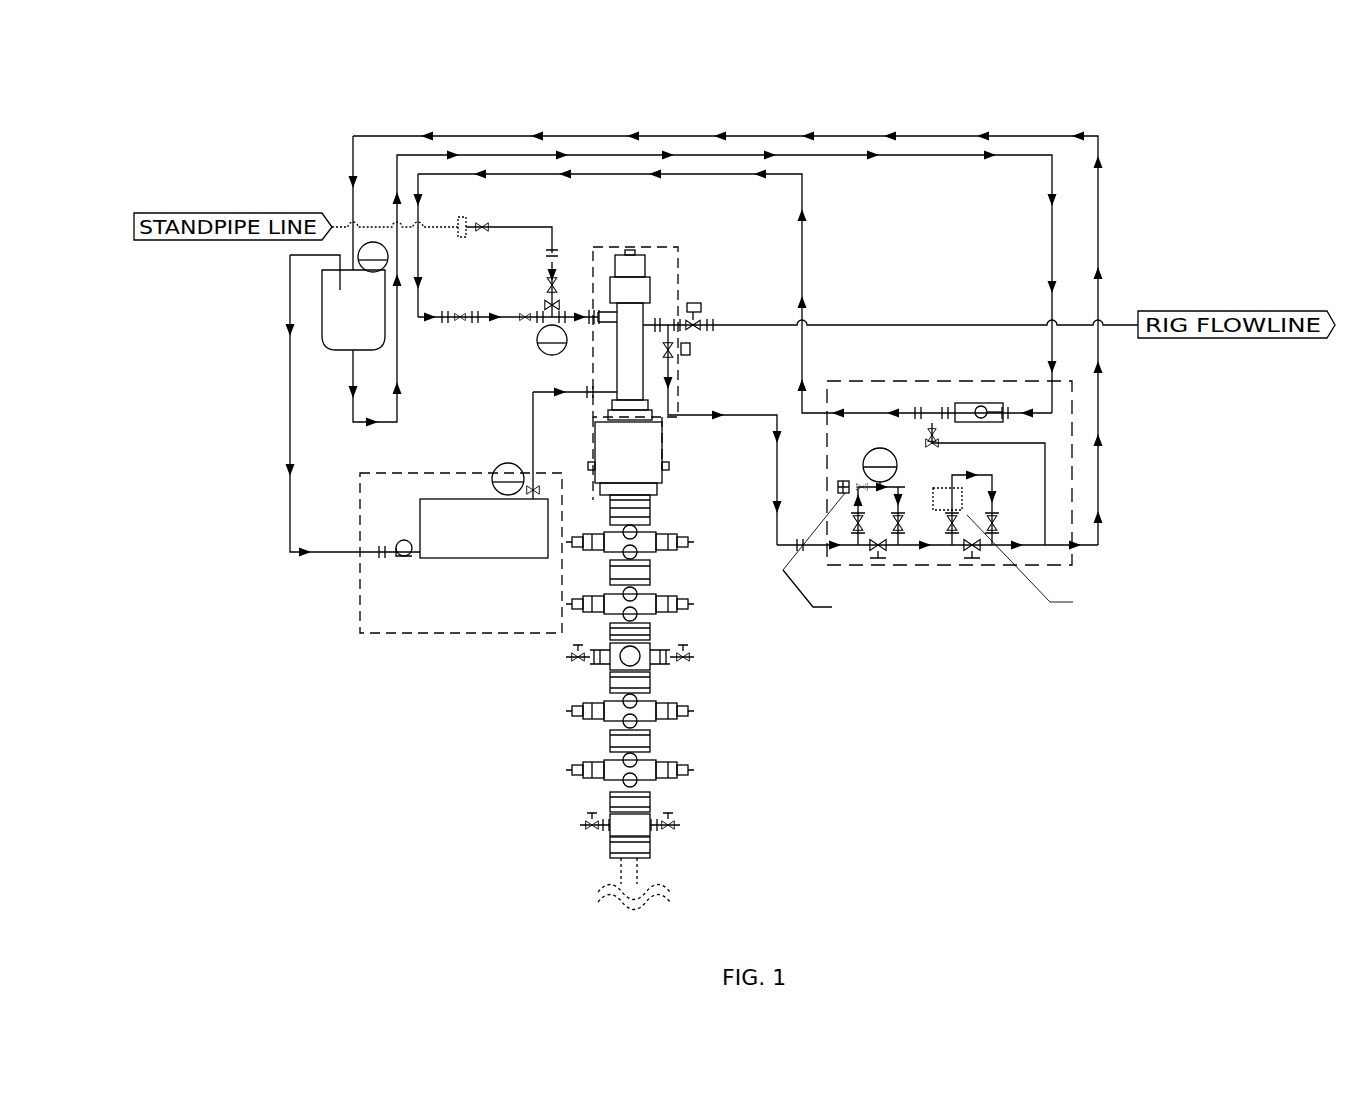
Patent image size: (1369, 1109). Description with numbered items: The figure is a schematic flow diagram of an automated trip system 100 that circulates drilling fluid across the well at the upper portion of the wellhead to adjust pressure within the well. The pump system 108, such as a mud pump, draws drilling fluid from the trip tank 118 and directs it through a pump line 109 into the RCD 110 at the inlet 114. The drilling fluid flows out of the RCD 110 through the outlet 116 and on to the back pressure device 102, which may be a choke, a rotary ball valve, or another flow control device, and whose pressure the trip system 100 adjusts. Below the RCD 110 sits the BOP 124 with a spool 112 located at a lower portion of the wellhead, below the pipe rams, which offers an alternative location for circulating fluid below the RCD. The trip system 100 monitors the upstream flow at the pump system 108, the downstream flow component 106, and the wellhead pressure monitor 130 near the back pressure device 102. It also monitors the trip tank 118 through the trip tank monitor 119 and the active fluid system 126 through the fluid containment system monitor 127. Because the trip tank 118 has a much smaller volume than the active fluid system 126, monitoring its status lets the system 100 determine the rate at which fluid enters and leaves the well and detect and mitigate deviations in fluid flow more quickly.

The automated trip system 100 is at (987, 658).
The back pressure device 102 is at (880, 640).
The downstream flow component 106 is at (1112, 648).
The pump system 108 is at (972, 377).
The pump line 109 is at (948, 370).
The RCD 110 is at (612, 283).
The spool 112 is at (612, 842).
The inlet 114 is at (587, 327).
The outlet 116 is at (652, 318).
The trip tank 118 is at (322, 330).
The trip tank monitor 119 is at (322, 282).
The blowout preventer (BOP) 124 is at (668, 470).
The active fluid system 126 is at (413, 635).
The fluid containment system monitor 127 is at (358, 510).
The wellhead pressure monitor 130 is at (845, 480).